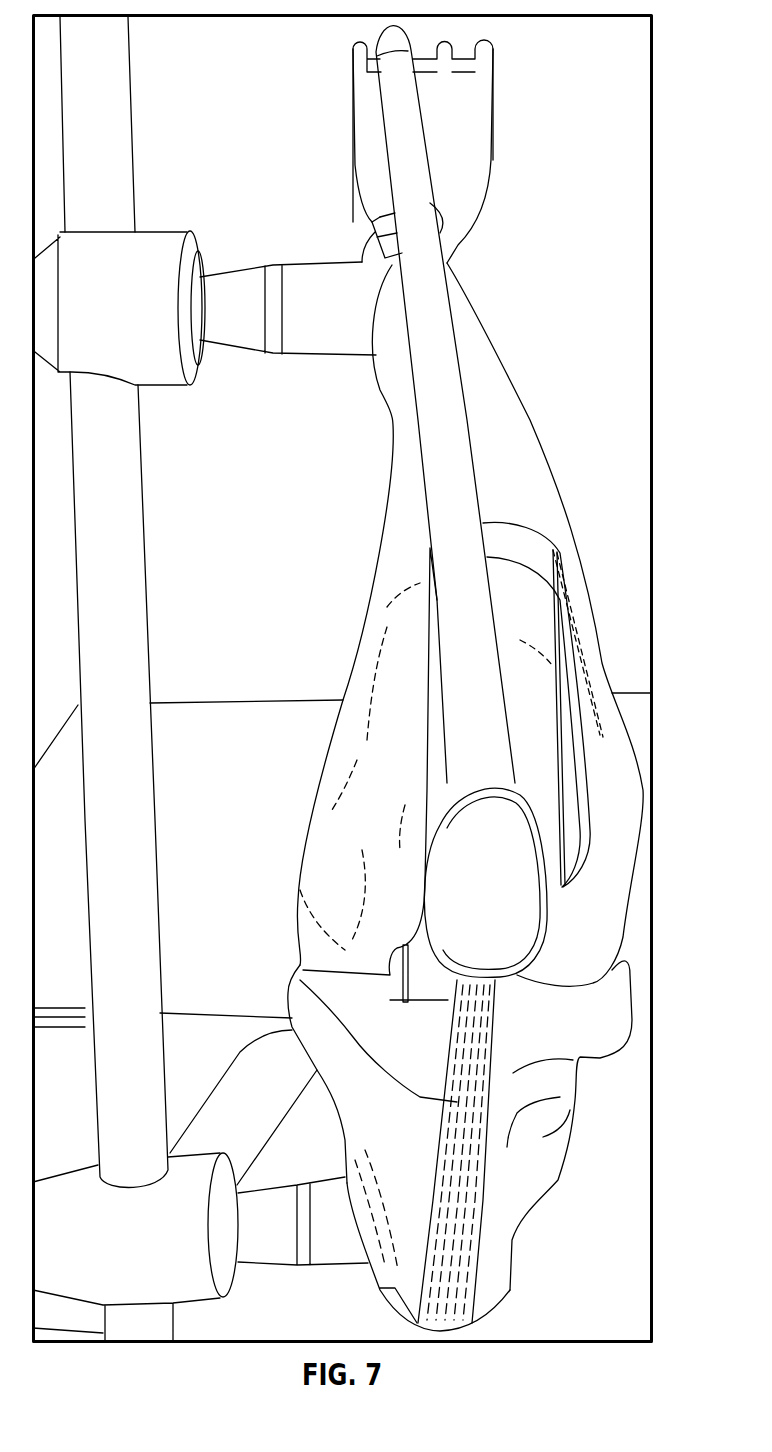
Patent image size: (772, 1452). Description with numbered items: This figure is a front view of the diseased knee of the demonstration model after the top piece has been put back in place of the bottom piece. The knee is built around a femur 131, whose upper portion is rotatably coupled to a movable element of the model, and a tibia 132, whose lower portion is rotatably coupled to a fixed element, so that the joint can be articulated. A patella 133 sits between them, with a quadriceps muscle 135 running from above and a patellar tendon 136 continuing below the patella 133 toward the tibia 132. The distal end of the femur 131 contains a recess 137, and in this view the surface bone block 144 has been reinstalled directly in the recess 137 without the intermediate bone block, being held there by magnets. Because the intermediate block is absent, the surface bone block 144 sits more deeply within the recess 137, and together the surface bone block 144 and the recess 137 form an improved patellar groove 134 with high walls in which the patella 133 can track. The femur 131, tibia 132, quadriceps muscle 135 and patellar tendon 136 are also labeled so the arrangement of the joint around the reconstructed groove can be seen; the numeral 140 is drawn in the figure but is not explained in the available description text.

The femur 131 is at (350, 748).
The tibia 132 is at (345, 1223).
The patella 133 is at (522, 865).
The patellar groove 134 is at (568, 612).
The quadriceps muscle 135 is at (448, 498).
The patellar tendon 136 is at (303, 972).
The recess 137 is at (520, 540).
The tibia 140 is at (540, 1135).
The surface bone block 144 is at (547, 673).